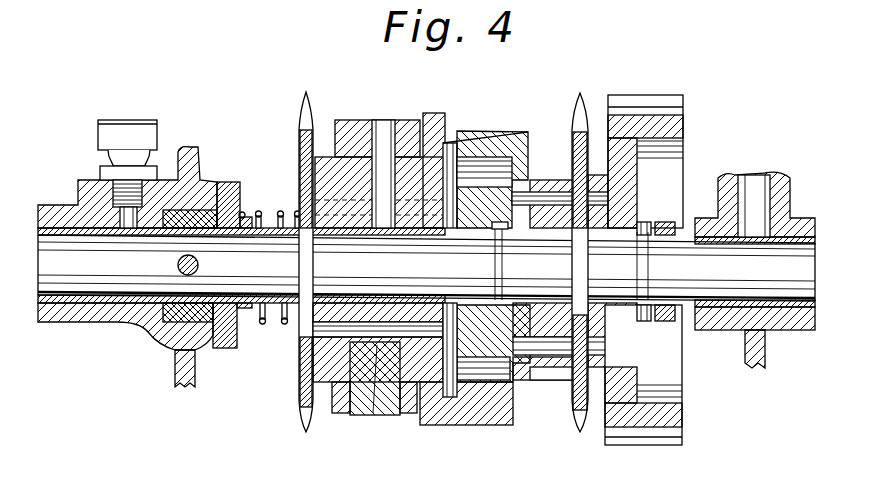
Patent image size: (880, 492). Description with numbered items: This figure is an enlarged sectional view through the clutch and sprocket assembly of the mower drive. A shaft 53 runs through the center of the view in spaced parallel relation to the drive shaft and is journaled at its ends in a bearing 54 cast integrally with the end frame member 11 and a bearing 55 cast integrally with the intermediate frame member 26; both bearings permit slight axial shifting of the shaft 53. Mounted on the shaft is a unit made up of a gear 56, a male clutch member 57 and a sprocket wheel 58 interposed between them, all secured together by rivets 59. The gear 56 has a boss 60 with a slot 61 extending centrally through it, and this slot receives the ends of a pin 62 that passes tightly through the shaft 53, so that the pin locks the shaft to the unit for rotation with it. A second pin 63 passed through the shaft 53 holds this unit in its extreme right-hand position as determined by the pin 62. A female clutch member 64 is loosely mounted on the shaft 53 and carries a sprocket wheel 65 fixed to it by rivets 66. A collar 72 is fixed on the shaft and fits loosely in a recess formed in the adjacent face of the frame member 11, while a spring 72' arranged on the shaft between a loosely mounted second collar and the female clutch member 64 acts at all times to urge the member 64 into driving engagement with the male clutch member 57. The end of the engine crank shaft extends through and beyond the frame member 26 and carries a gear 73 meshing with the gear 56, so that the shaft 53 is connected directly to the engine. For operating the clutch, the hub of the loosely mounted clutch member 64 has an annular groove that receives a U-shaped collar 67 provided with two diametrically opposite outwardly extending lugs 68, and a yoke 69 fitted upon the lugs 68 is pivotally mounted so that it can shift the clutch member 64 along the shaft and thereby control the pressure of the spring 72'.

The end frame member 11 is at (183, 373).
The intermediate frame member 26 is at (748, 366).
The shaft 53 is at (277, 290).
The bearing 54 is at (120, 317).
The bearing 55 is at (802, 328).
The gear 56 is at (650, 123).
The male clutch member 57 is at (546, 124).
The sprocket wheel 58 is at (587, 100).
The rivets 59 is at (632, 197).
The boss 60 is at (672, 211).
The slot 61 is at (667, 318).
The pin 62 is at (648, 267).
The second pin 63 is at (498, 265).
The female clutch member 64 is at (470, 417).
The sprocket wheel 65 is at (300, 423).
The rivets 66 is at (300, 178).
The U-shaped collar 67 is at (377, 365).
The lugs 68 is at (390, 122).
The yoke 69 is at (358, 110).
The collar 72 is at (175, 174).
The spring 72' is at (252, 204).
The gear 73 is at (227, 350).